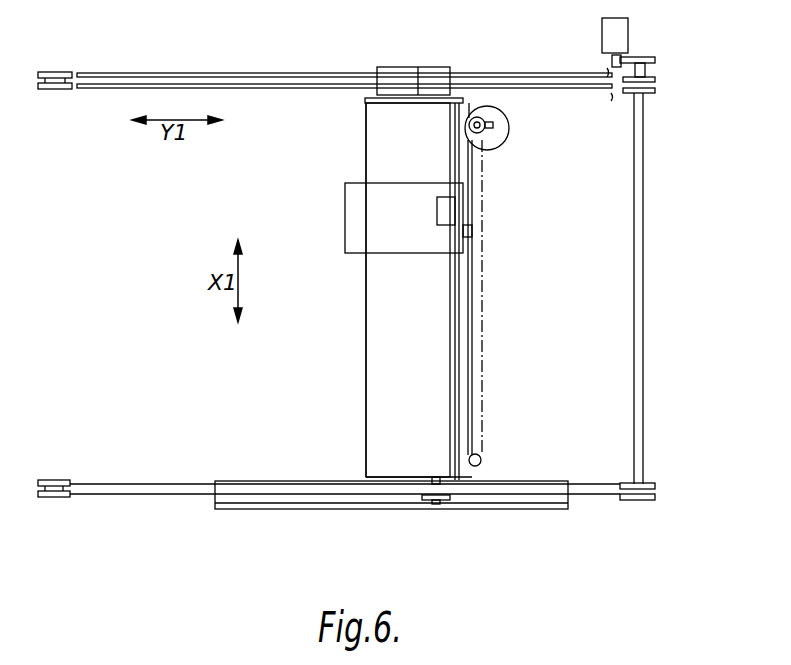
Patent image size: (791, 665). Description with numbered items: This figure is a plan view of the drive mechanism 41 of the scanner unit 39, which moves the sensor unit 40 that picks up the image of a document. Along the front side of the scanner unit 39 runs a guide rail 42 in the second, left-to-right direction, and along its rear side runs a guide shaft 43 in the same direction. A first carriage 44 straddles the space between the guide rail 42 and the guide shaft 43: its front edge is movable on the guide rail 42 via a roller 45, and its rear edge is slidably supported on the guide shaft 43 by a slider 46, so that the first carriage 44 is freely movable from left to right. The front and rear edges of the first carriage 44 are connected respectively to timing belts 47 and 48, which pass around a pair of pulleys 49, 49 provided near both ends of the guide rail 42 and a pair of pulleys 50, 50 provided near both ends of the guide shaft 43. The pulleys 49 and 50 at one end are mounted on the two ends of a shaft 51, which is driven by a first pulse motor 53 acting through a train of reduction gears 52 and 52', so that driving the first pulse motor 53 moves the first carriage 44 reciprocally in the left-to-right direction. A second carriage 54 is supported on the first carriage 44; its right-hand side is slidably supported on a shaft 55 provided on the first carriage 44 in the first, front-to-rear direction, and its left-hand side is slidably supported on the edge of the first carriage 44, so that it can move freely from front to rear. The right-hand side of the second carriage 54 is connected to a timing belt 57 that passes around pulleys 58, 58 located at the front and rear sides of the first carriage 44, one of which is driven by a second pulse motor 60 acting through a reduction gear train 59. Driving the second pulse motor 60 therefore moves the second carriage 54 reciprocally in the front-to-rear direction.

The scanner unit 39 is at (380, 305).
The sensor unit 40 is at (452, 212).
The drive mechanism 41 is at (487, 304).
The guide rail 42 is at (268, 509).
The guide shaft 43 is at (272, 72).
The first carriage 44 is at (370, 367).
The roller 45 is at (440, 504).
The slider 46 is at (394, 67).
The timing belt 47 is at (165, 494).
The timing belt 48 is at (175, 82).
The pulleys 49 is at (64, 497).
The pulleys 50 is at (70, 72).
The shaft 51 is at (643, 305).
The reduction gear 52 is at (649, 48).
The reduction gear 52' is at (590, 58).
The first pulse motor 53 is at (602, 35).
The second carriage 54 is at (345, 212).
The shaft 55 is at (458, 378).
The timing belt 57 is at (485, 258).
The pulleys 58 is at (483, 146).
The reduction gear train 59 is at (494, 120).
The second pulse motor 60 is at (508, 138).